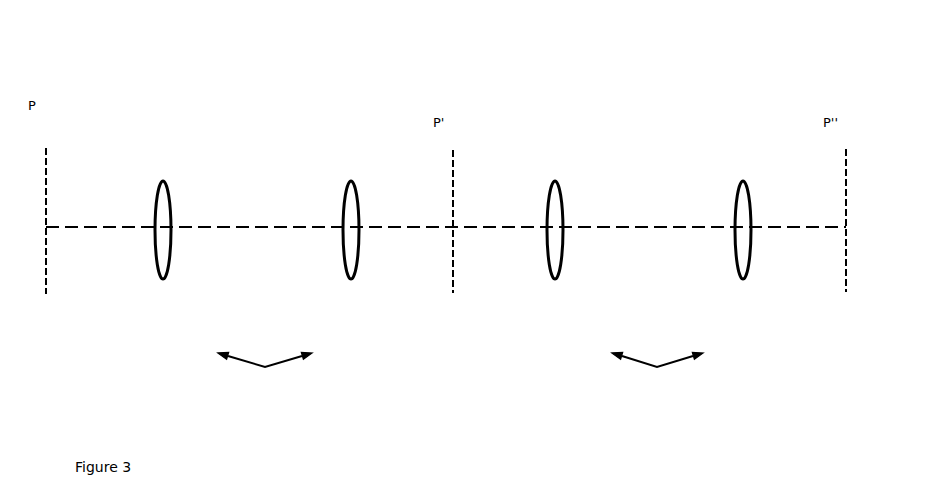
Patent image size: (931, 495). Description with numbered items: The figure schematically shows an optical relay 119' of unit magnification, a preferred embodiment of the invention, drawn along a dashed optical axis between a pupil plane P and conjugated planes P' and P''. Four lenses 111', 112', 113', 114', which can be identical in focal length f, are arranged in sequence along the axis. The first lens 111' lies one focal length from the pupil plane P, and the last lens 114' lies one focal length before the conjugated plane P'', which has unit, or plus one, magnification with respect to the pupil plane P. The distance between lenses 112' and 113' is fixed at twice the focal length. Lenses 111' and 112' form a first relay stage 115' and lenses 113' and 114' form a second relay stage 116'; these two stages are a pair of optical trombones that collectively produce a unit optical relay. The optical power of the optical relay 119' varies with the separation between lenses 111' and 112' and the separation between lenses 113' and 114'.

The first lens 111' is at (176, 256).
The lens 112' is at (364, 256).
The lens 113' is at (568, 256).
The last lens 114' is at (756, 256).
The relay stage 115' is at (265, 374).
The relay stage 116' is at (657, 374).
The optical relay 119' is at (670, 53).